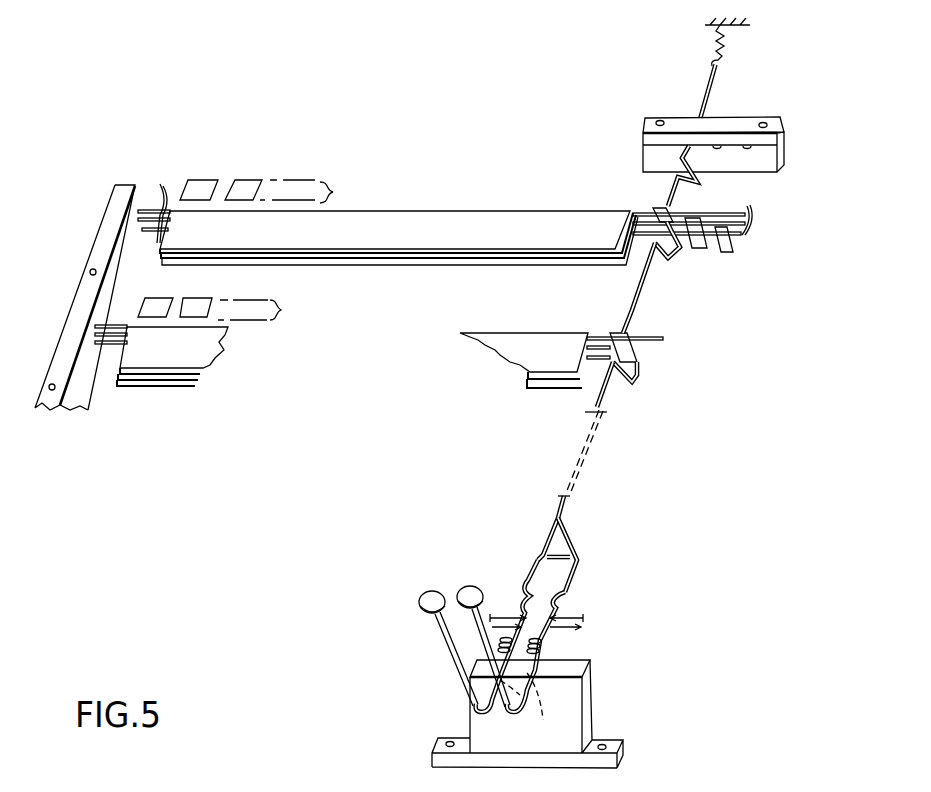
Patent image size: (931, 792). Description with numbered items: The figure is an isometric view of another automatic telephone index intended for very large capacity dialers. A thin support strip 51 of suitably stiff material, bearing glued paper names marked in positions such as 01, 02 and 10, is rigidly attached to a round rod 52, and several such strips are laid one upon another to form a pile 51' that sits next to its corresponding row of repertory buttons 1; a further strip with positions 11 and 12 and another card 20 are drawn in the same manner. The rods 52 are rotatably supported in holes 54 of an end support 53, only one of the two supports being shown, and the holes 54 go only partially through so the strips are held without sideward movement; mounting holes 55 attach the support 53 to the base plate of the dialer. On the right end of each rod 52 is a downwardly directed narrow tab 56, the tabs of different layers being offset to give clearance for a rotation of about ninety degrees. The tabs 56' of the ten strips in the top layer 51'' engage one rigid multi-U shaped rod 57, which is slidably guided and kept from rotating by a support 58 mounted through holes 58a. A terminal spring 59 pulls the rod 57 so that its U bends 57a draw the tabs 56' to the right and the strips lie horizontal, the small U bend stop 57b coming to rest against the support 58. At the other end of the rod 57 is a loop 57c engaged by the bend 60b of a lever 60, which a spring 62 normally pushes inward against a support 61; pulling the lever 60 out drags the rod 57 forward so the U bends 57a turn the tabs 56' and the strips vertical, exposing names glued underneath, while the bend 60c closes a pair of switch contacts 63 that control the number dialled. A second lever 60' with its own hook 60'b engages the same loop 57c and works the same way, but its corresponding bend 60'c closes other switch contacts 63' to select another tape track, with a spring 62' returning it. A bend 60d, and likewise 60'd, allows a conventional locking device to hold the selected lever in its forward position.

The repertory buttons 1 is at (243, 180).
The terminal position marking 01 is at (182, 231).
The terminal position marking 02 is at (234, 232).
The terminal position marking 10 is at (591, 233).
The terminal position marking 11 is at (172, 356).
The terminal position marking 12 is at (172, 356).
The terminal position marking 20 is at (561, 360).
The support strip 51 is at (399, 240).
The pile of strips 51' is at (406, 280).
The top layer of strips 51'' is at (441, 196).
The round rod 52 is at (160, 184).
The end support 53 is at (115, 210).
The holes 54 is at (95, 343).
The mounting holes 55 is at (90, 273).
The tab 56 is at (704, 242).
The tab of top-layer strip 56' is at (650, 272).
The rigid multi-U shaped rod 57 is at (640, 308).
The U bends 57a is at (675, 262).
The U bend stop 57b is at (701, 190).
The loop 57c is at (555, 517).
The support 58 is at (785, 144).
The holes 58a is at (763, 117).
The terminal spring 59 is at (722, 53).
The lever 60 is at (437, 648).
The second lever 60' is at (483, 666).
The bend 60b is at (540, 557).
The hook 60'b is at (592, 555).
The bend 60c is at (532, 580).
The second lever spring arm 60'c is at (571, 634).
The bend 60d is at (542, 715).
The second lever pivot portion 60'd is at (542, 696).
The support 61 is at (593, 713).
The spring 62 is at (462, 657).
The second coil spring 62' is at (559, 645).
The switch contacts 63 is at (508, 603).
The switch contacts 63' is at (587, 608).